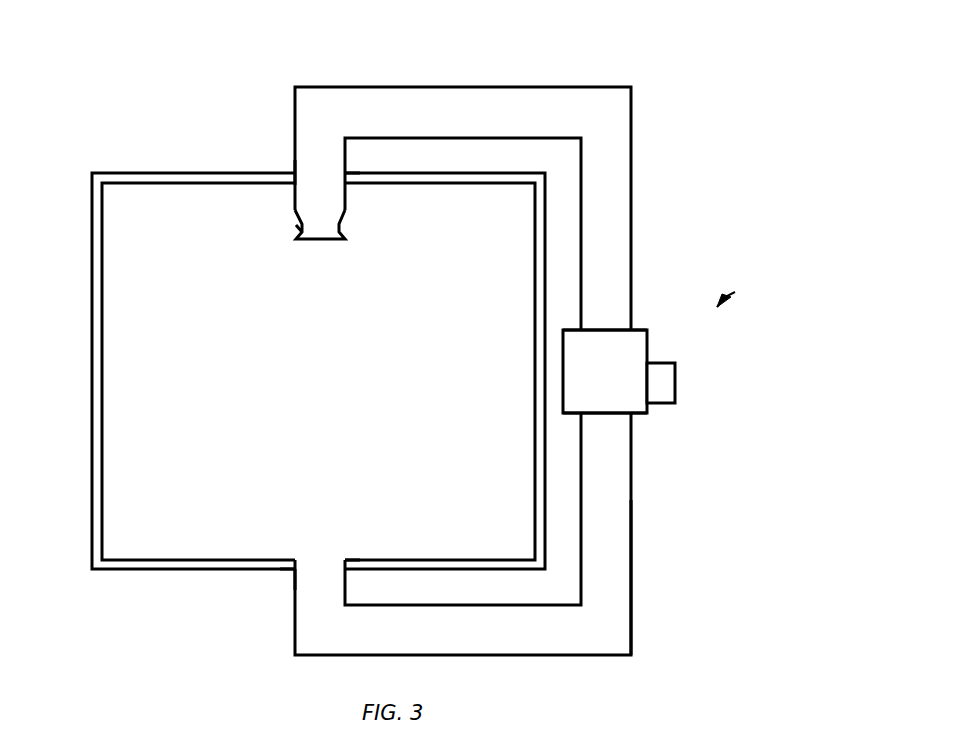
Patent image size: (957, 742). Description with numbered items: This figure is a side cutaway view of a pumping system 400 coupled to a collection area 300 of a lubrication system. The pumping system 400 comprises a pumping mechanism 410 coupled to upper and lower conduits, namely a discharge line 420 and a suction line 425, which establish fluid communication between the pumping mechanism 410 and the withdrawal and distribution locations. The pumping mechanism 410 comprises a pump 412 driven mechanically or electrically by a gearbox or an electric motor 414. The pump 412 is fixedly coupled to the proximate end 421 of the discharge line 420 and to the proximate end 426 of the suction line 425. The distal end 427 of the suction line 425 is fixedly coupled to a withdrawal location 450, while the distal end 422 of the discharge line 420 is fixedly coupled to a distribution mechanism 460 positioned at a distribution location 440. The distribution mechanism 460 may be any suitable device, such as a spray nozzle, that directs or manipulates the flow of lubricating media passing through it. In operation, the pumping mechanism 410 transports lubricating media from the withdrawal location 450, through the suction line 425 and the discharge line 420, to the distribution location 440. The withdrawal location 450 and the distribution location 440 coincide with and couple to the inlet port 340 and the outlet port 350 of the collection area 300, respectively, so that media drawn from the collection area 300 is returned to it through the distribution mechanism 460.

The collection area 300 is at (92, 235).
The inlet port 340 is at (347, 184).
The outlet port 350 is at (302, 560).
The pumping system 400 is at (735, 292).
The pumping mechanism 410 is at (640, 359).
The pump 412 is at (640, 338).
The electric motor 414 is at (662, 386).
The discharge line 420 is at (618, 138).
The proximate end of discharge line 421 is at (610, 329).
The distal end of discharge line 422 is at (293, 172).
The suction line 425 is at (618, 533).
The proximate end of suction line 426 is at (640, 413).
The distal end of suction line 427 is at (292, 570).
The distribution location 440 is at (322, 239).
The withdrawal location 450 is at (318, 562).
The distribution mechanism 460 is at (317, 230).